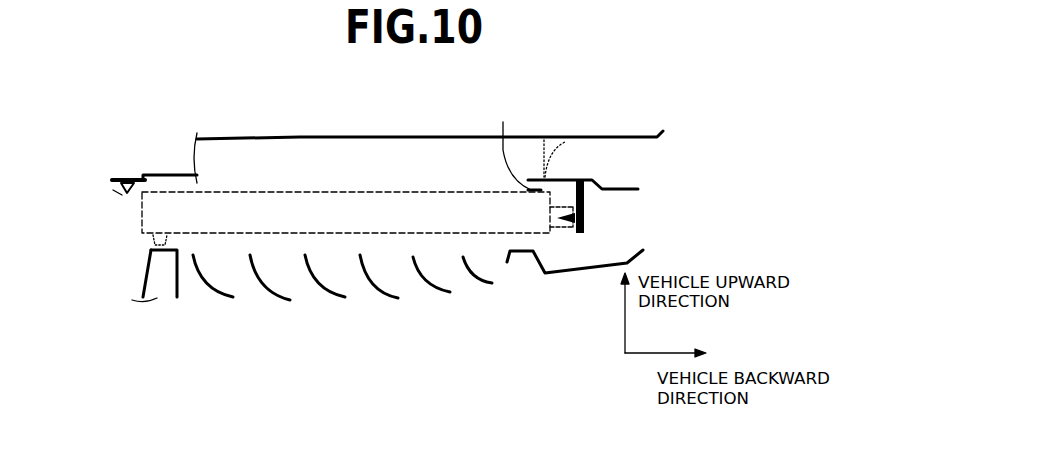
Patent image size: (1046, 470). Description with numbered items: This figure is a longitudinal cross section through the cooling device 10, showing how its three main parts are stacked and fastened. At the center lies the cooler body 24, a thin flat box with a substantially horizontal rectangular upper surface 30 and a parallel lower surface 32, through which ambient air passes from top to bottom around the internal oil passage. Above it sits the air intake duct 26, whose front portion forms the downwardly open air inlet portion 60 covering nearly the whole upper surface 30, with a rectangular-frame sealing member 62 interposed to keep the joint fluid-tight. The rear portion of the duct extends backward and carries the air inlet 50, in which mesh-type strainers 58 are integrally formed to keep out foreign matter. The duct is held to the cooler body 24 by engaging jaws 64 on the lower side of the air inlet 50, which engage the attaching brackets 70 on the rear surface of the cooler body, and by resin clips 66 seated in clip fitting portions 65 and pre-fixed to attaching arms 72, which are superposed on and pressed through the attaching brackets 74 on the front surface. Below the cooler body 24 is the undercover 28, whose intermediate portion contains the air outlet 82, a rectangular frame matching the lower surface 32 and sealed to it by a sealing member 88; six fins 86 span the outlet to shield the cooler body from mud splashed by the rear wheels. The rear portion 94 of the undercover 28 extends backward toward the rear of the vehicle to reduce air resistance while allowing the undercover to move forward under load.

The cooling device 10 is at (648, 94).
The cooler body 24 is at (303, 207).
The air intake duct 26 is at (261, 124).
The undercover 28 is at (361, 313).
The upper surface 30 is at (430, 191).
The lower surface 32 is at (477, 240).
The air inlet 50 is at (607, 136).
The mesh-type strainers 58 is at (565, 140).
The air inlet portion 60 is at (363, 136).
The sealing member 62 is at (518, 144).
The engaging jaws 64 is at (585, 210).
The clip fitting portions 65 is at (103, 161).
The resin clips 66 is at (127, 175).
The attaching brackets 70 is at (558, 235).
The attaching arms 72 is at (165, 173).
The attaching brackets 74 is at (115, 193).
The air outlet 82 is at (171, 281).
The fins 86 is at (313, 278).
The sealing member 88 is at (148, 238).
The rear portion 94 is at (592, 268).